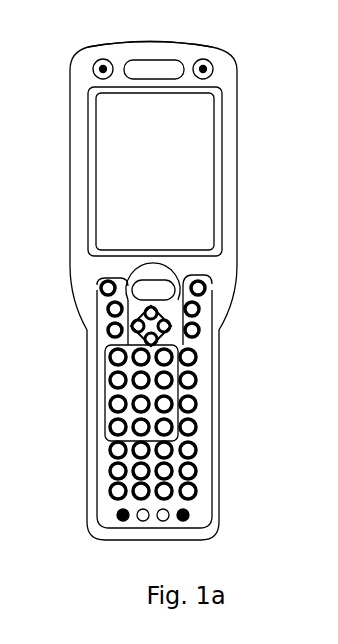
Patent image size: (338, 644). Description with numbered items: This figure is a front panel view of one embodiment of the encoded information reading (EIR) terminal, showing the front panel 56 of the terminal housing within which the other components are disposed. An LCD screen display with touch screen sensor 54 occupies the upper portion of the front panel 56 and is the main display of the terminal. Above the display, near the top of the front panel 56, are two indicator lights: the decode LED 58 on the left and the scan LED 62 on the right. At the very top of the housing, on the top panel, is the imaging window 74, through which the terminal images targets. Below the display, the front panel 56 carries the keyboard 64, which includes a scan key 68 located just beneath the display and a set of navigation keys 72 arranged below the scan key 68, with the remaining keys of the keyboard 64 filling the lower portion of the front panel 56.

The LCD screen display with touch screen sensor 54 is at (140, 174).
The front panel 56 is at (78, 116).
The decode LED 58 is at (93, 65).
The scan LED 62 is at (213, 64).
The keyboard 64 is at (118, 395).
The scan key 68 is at (128, 281).
The navigation keys 72 is at (128, 320).
The imaging window 74 is at (151, 42).